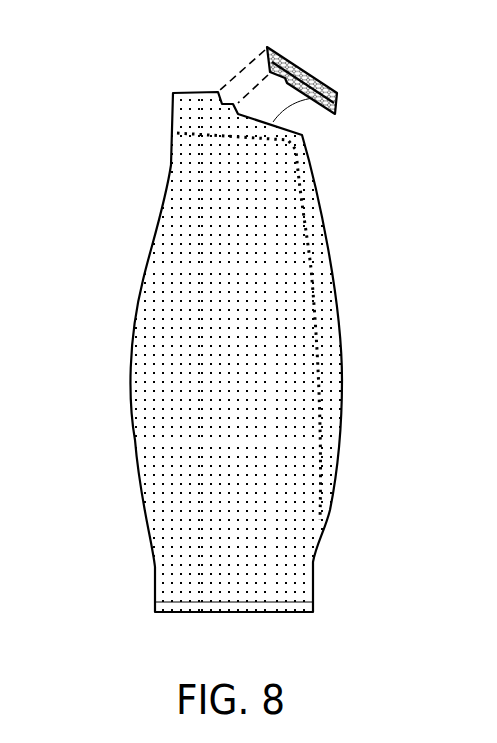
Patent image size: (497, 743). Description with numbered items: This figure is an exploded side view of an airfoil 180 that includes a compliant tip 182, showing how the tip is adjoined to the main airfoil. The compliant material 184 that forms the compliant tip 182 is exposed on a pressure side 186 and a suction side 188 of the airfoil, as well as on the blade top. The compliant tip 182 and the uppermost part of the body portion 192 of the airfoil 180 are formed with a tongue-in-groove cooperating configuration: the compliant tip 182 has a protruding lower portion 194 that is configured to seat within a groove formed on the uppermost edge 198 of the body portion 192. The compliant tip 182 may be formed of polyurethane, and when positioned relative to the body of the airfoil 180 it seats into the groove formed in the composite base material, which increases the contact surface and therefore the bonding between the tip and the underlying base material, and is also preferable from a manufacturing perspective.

The airfoil 180 is at (126, 82).
The compliant tip 182 is at (335, 96).
The compliant material 184 is at (278, 48).
The pressure side 186 is at (164, 467).
The suction side 188 is at (176, 232).
The body portion 192 is at (207, 70).
The protruding lower portion 194 is at (316, 108).
The uppermost edge 198 is at (318, 93).